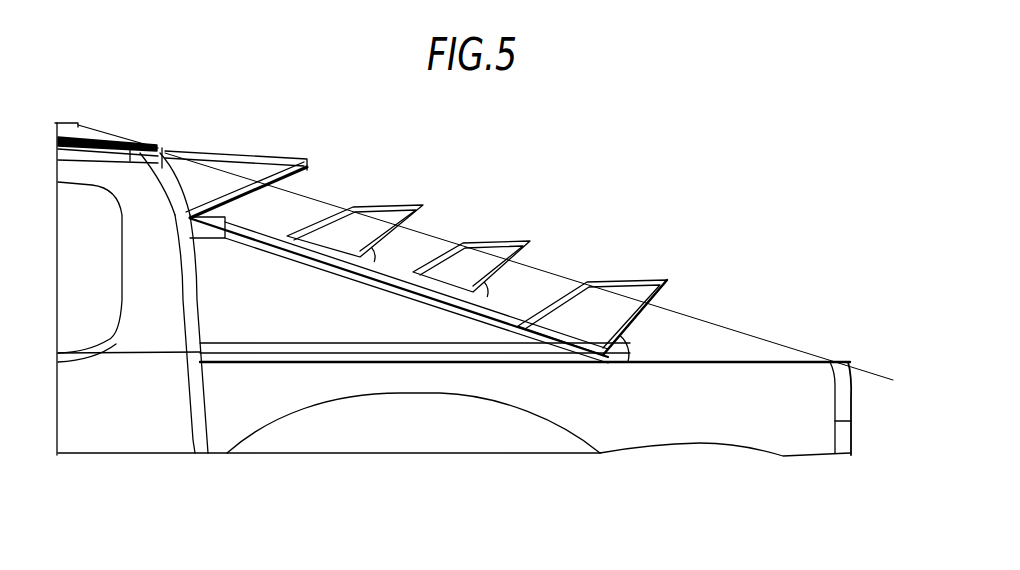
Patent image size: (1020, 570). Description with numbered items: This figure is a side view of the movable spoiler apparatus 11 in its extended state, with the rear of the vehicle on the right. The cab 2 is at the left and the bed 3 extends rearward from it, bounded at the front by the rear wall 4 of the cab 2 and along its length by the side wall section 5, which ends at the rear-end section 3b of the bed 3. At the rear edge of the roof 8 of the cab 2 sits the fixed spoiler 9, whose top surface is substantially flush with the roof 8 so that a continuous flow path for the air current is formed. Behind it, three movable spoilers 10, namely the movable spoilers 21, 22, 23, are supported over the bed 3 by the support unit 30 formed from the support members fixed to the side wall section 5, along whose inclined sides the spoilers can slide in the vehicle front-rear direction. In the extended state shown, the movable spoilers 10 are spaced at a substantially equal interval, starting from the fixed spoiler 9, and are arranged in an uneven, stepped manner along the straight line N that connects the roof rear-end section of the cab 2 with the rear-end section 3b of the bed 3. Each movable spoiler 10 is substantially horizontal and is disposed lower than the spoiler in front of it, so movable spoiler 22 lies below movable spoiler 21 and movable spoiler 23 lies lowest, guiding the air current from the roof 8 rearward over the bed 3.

The cab 2 is at (73, 137).
The bed 3 is at (745, 362).
The rear-end section 3b is at (848, 361).
The rear wall 4 is at (200, 448).
The side wall section 5 is at (700, 441).
The roof 8 is at (157, 150).
The fixed spoiler 9 is at (277, 158).
The movable spoiler 10 is at (482, 273).
The movable spoiler 21 is at (622, 354).
The movable spoiler 22 is at (473, 296).
The movable spoiler 23 is at (357, 272).
The movable spoiler apparatus 11 is at (638, 202).
The support unit 30 is at (508, 264).
The straight line N is at (310, 196).